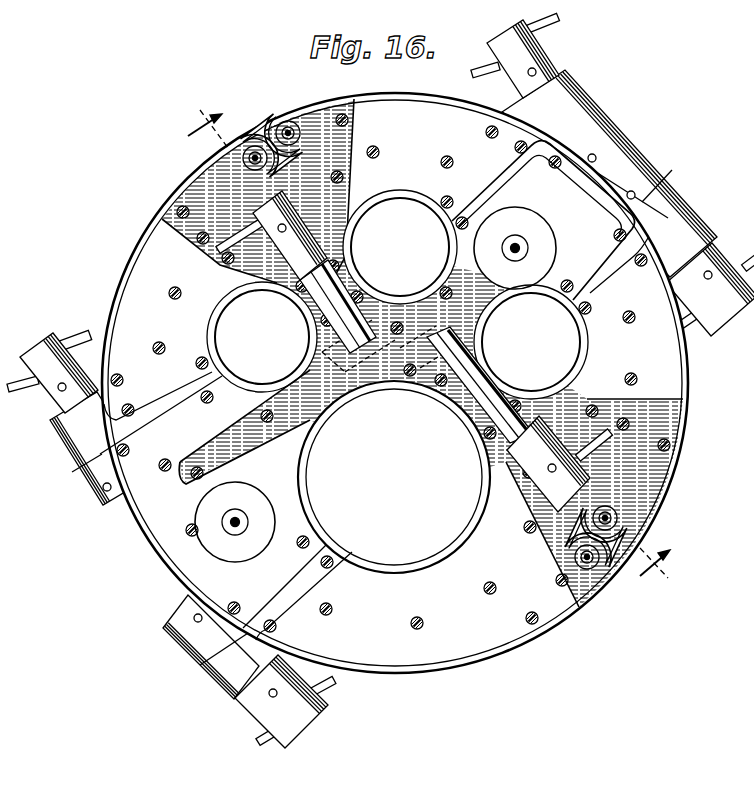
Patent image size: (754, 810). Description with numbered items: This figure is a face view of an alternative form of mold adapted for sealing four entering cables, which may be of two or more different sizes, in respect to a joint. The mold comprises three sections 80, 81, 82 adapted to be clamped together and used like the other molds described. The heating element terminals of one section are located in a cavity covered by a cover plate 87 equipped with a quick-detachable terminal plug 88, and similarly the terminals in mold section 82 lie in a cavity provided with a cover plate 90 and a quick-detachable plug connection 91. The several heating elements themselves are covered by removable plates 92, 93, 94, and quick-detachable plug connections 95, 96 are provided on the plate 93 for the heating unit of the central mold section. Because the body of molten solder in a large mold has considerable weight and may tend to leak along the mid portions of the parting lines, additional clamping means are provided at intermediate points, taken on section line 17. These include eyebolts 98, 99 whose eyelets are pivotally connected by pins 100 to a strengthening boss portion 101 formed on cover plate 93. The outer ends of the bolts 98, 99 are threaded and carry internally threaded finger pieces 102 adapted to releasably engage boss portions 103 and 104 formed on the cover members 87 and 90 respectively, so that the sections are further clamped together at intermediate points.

The section line 17- 17 is at (437, 340).
The mold section 80 is at (150, 263).
The mold section 81 is at (165, 543).
The mold section 82 is at (432, 666).
The cover plate 87 is at (212, 181).
The quick-detachable terminal plug 88 is at (262, 135).
The cover plate 90 is at (666, 470).
The quick-detachable plug connection 91 is at (638, 528).
The removable plate 92 is at (208, 368).
The removable plate 93 is at (249, 566).
The removable plate 94 is at (474, 604).
The quick-detachable plug connection 95 is at (238, 540).
The quick-detachable plug connection 96 is at (537, 240).
The eyebolt 98 is at (482, 372).
The eyebolt 99 is at (348, 284).
The pin 100 is at (430, 342).
The strengthening boss portion 101 is at (376, 378).
The finger piece 102 is at (256, 214).
The boss portion 103 is at (334, 256).
The boss portion 104 is at (543, 405).